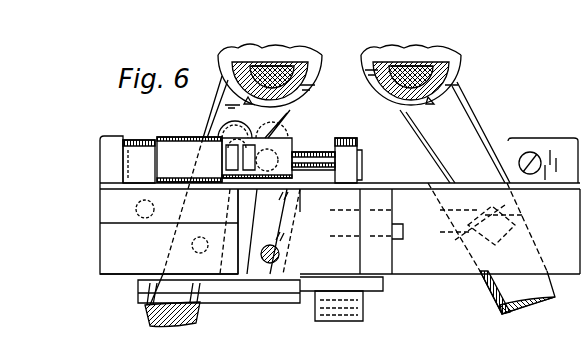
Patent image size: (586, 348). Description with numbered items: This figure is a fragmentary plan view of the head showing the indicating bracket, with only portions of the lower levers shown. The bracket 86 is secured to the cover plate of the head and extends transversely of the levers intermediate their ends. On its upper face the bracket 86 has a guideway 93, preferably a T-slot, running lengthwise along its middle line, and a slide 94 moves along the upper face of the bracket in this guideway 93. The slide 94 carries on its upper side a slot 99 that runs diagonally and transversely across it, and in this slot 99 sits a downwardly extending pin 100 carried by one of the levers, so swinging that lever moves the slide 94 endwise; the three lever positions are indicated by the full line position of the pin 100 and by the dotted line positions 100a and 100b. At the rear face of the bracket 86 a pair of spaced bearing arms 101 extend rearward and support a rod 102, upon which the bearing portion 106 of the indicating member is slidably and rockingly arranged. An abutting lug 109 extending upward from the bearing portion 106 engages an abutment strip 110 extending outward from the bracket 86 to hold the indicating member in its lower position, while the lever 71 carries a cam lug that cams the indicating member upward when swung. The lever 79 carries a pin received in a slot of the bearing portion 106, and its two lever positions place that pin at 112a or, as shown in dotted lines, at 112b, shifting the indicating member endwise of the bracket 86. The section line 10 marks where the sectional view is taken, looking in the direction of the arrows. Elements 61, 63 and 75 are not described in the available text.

The section line 10 is at (330, 80).
The mounting block 61 is at (450, 345).
The socket arm 63 is at (447, 65).
The lever 71 is at (538, 310).
The socket arm 75 is at (245, 58).
The lever 79 is at (155, 322).
The bracket 86 is at (453, 262).
The guideway 93 is at (107, 225).
The slide 94 is at (250, 215).
The slot 99 is at (290, 222).
The pin 100 is at (280, 253).
The dotted line position of the pin 100a is at (185, 250).
The dotted line position of the pin 100b is at (140, 210).
The bearing arms 101 is at (137, 140).
The rod 102 is at (310, 152).
The bearing portion 106 is at (172, 138).
The abutting lug 109 is at (215, 162).
The abutment strip 110 is at (302, 166).
The position of the pin 112a is at (212, 132).
The position of the pin 112b is at (290, 130).